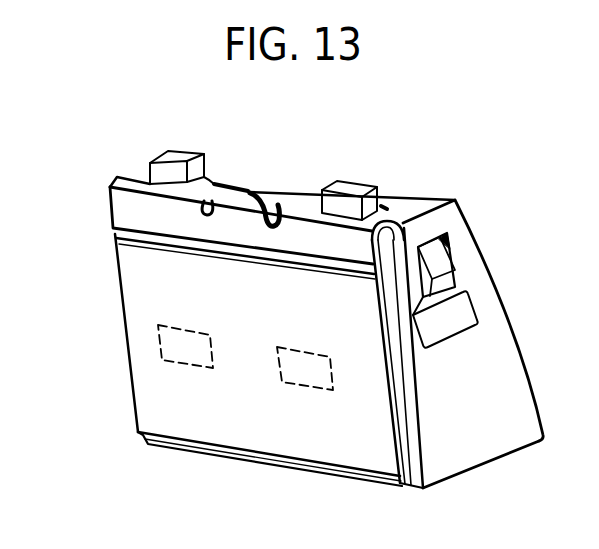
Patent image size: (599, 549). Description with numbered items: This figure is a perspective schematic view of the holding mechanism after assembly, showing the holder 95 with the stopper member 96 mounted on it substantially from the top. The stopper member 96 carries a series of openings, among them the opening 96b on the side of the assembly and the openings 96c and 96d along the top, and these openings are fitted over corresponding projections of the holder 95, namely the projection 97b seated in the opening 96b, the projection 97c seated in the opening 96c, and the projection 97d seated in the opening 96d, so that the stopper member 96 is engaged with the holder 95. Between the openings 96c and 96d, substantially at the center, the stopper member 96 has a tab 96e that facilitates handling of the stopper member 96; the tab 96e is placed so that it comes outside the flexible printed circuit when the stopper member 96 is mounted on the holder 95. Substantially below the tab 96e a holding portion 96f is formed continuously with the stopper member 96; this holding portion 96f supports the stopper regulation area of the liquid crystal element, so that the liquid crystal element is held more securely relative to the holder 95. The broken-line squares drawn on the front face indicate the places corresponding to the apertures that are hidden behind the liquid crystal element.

The holder 95 is at (490, 477).
The stopper member 96 is at (457, 172).
The opening 96b is at (451, 240).
The opening 96c is at (211, 179).
The opening 96d is at (385, 205).
The tab 96e is at (253, 192).
The holding portion 96f is at (124, 205).
The projection 97b is at (449, 284).
The projection 97c is at (153, 165).
The projection 97d is at (350, 185).